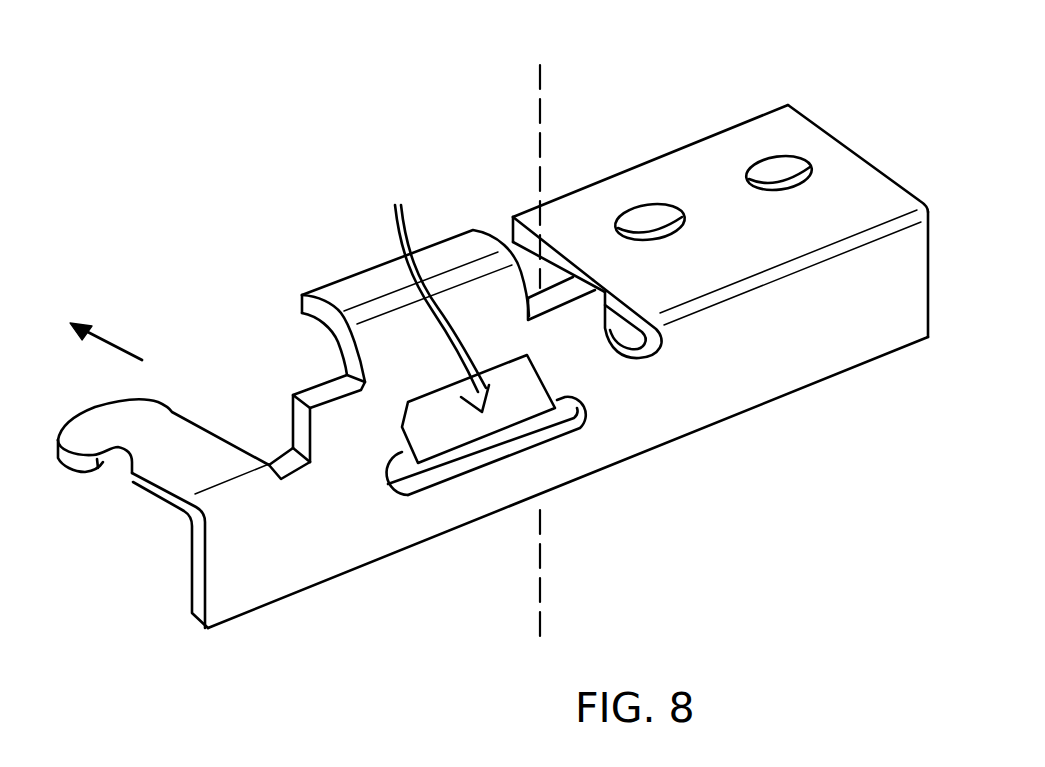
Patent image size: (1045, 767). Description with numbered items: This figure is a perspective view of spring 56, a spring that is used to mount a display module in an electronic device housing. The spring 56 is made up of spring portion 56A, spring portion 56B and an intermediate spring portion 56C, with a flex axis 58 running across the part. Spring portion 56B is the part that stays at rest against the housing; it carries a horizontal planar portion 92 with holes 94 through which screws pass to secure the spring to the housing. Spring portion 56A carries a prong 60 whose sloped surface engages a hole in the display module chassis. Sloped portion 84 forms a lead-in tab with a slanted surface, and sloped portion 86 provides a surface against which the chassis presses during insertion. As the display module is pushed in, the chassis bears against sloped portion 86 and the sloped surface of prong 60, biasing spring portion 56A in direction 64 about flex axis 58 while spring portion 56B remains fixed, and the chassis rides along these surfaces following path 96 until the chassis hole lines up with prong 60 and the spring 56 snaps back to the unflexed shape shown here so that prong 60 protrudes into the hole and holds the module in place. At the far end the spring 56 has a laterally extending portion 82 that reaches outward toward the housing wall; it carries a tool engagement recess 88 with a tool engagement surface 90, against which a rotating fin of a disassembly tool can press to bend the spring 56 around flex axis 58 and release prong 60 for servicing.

The spring 56 is at (432, 122).
The spring portion 56A is at (536, 511).
The spring portion 56B is at (927, 351).
The third wall section 56C is at (672, 457).
The flex axis 58 is at (540, 80).
The prong 60 is at (457, 438).
The direction 64 is at (108, 338).
The laterally extending portion 82 is at (174, 431).
The sloped portion 84 is at (331, 373).
The sloped portion 86 is at (375, 303).
The tool engagement recess 88 is at (111, 476).
The tool engagement surface 90 is at (98, 472).
The horizontal planar portion 92 is at (800, 103).
The holes 94 is at (646, 206).
The path 96 is at (402, 236).